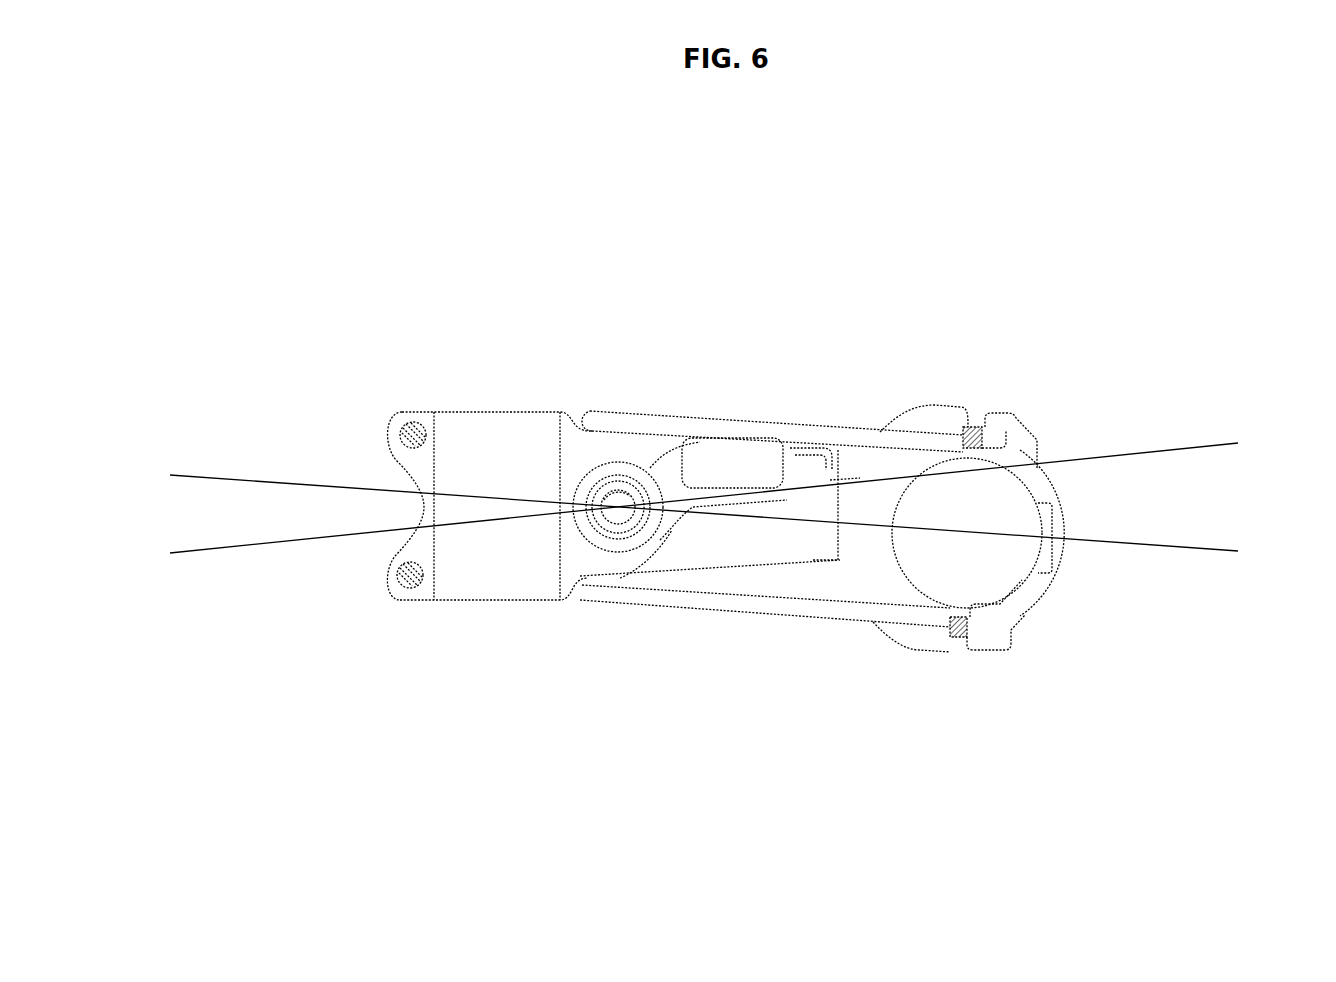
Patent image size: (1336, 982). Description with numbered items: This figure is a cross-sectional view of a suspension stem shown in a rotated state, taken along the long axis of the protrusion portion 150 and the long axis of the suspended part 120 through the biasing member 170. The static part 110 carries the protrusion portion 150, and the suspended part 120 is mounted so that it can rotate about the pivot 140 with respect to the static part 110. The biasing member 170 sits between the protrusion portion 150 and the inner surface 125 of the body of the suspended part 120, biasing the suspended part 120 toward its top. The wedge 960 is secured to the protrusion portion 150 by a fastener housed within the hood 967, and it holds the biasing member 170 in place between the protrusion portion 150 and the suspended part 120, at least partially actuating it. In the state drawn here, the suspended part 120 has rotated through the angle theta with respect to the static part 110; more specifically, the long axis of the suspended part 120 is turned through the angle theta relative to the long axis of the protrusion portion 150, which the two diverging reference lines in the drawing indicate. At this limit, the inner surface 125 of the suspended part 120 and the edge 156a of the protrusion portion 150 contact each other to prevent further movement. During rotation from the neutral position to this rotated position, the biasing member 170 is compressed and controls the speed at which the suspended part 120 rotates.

The static part 110 is at (393, 423).
The suspended part 120 is at (827, 428).
The inner surface 125 is at (858, 447).
The pivot 140 is at (618, 515).
The protrusion portion 150 is at (655, 550).
The edge 156a is at (718, 437).
The biasing member 170 is at (767, 450).
The wedge 960 is at (810, 537).
The hood 967 is at (837, 495).
The angle θ theta is at (1157, 453).